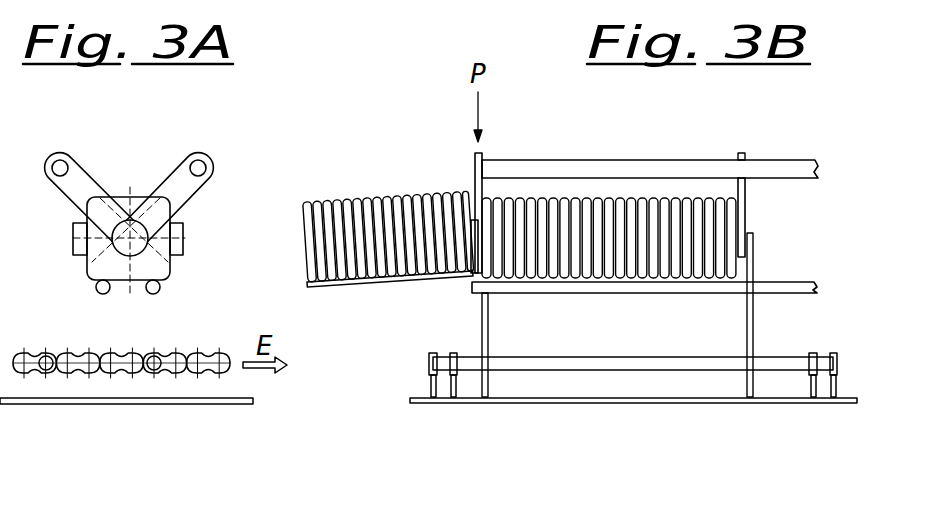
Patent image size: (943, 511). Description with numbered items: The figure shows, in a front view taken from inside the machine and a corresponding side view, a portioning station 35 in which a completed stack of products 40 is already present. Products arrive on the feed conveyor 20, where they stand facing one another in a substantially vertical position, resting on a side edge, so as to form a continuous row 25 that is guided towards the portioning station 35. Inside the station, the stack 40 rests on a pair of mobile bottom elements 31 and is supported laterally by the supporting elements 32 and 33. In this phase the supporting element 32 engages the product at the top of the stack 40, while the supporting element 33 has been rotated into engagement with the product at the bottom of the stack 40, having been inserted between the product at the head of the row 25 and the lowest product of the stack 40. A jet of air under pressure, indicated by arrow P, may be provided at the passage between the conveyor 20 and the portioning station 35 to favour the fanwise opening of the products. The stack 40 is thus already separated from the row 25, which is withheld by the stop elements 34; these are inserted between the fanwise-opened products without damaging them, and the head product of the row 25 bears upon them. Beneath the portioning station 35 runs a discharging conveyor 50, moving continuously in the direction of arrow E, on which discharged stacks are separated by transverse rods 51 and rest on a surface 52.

In FIG. 3B, the feed conveyor 20 is at (340, 287).
In FIG. 3B, the row 25 is at (362, 213).
In FIG. 3A, the mobile bottom elements 31 is at (160, 288).
In FIG. 3B, the mobile bottom elements 31 is at (577, 290).
In FIG. 3A, the supporting element 32 is at (200, 188).
In FIG. 3B, the supporting element 32 is at (748, 205).
In FIG. 3A, the supporting element 33 is at (78, 168).
In FIG. 3B, the supporting element 33 is at (475, 185).
In FIG. 3A, the stop elements 34 is at (73, 246).
In FIG. 3B, the stop elements 34 is at (477, 250).
In FIG. 3A, the portioning station 35 is at (125, 167).
In FIG. 3B, the portioning station 35 is at (635, 153).
In FIG. 3A, the stack of products 40 is at (90, 270).
In FIG. 3B, the stack of products 40 is at (563, 212).
In FIG. 3A, the discharging conveyor 50 is at (258, 382).
In FIG. 3B, the discharging conveyor 50 is at (716, 412).
In FIG. 3A, the transverse rods 51 is at (43, 372).
In FIG. 3B, the transverse rods 51 is at (507, 365).
In FIG. 3A, the surface 52 is at (99, 405).
In FIG. 3B, the surface 52 is at (588, 403).